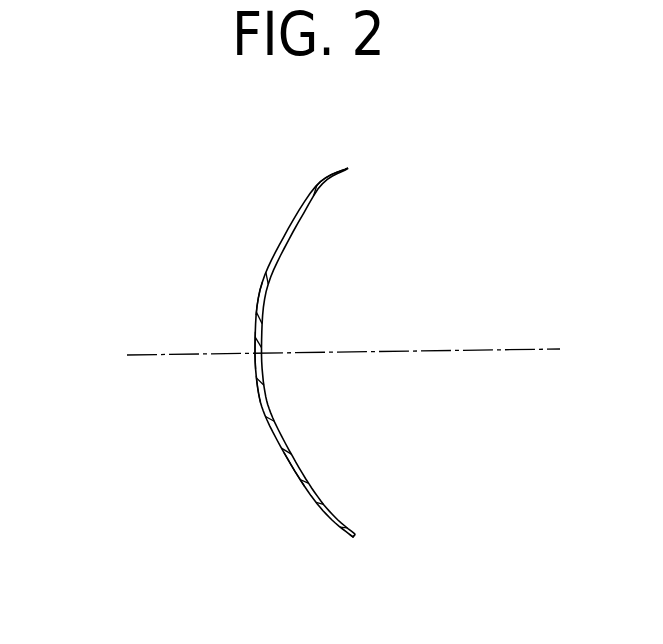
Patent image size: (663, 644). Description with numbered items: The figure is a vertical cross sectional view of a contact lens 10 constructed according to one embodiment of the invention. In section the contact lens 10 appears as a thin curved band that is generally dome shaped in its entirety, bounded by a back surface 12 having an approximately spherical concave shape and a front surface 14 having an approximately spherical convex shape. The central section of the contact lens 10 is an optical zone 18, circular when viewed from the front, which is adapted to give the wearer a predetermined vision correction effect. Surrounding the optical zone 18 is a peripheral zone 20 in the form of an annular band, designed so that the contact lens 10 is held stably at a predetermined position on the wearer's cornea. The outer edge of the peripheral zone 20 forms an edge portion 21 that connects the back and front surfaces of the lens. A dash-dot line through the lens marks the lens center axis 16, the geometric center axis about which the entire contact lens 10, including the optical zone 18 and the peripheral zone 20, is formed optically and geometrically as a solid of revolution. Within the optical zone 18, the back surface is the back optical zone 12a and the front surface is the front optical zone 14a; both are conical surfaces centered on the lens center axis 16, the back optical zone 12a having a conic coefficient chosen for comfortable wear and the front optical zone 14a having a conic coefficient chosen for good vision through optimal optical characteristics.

The contact lens 10 is at (288, 357).
The back surface 12 is at (303, 463).
The back optical zone 12a is at (265, 313).
The front surface 14 is at (296, 487).
The front optical zone 14a is at (257, 377).
The lens center axis 16 is at (508, 349).
The optical zone 18 is at (254, 338).
The peripheral zone 20 is at (324, 184).
The edge portion 21 is at (356, 543).